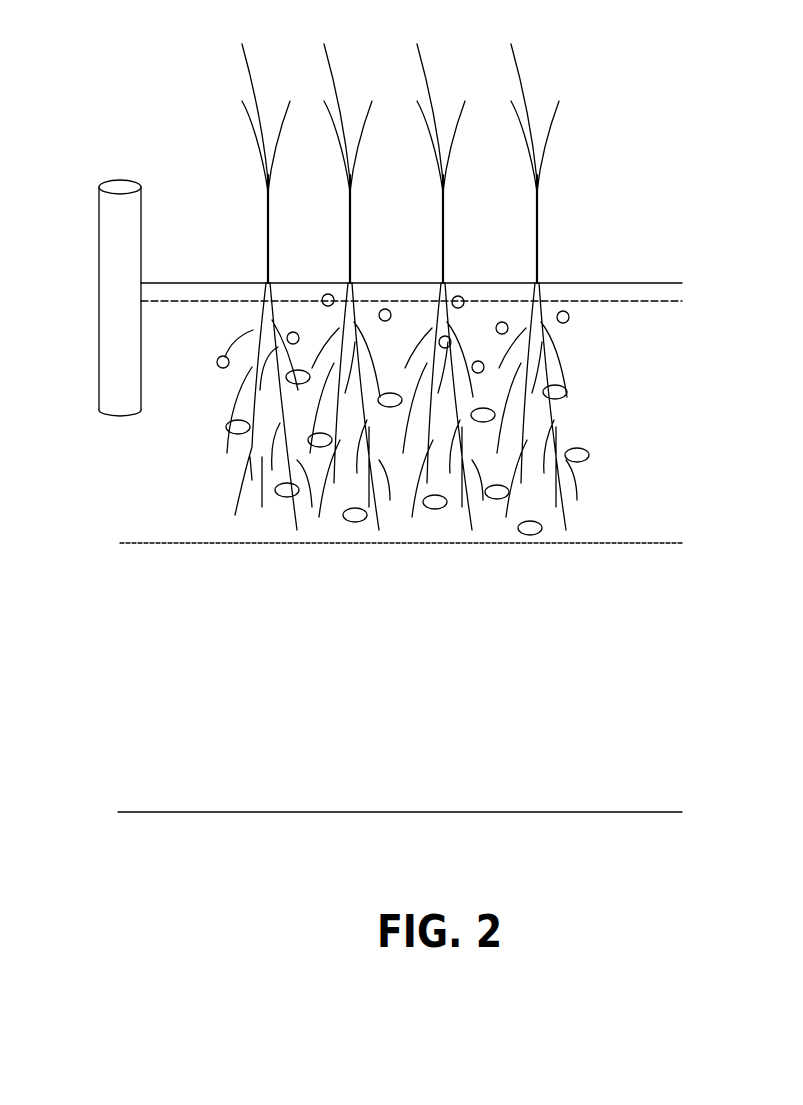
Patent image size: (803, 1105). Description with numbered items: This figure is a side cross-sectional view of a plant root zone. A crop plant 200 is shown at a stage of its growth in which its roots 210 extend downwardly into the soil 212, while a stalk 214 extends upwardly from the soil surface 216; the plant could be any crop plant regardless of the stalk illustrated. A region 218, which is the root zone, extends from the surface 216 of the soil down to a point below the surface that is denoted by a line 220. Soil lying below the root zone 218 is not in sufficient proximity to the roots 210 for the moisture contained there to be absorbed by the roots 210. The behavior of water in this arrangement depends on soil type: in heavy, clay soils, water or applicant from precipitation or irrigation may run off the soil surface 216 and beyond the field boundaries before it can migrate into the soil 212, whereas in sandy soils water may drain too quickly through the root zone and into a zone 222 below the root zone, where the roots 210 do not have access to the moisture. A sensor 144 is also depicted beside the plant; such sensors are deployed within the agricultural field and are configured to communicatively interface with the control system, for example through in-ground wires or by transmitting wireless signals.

The sensor 144 is at (115, 227).
The crop plant 200 is at (425, 163).
The roots 210 is at (565, 357).
The soil 212 is at (93, 549).
The stalk 214 is at (443, 253).
The soil surface 216 is at (612, 270).
The root zone 218 is at (702, 419).
The line 220 is at (622, 545).
The zone below the root zone 222 is at (390, 676).